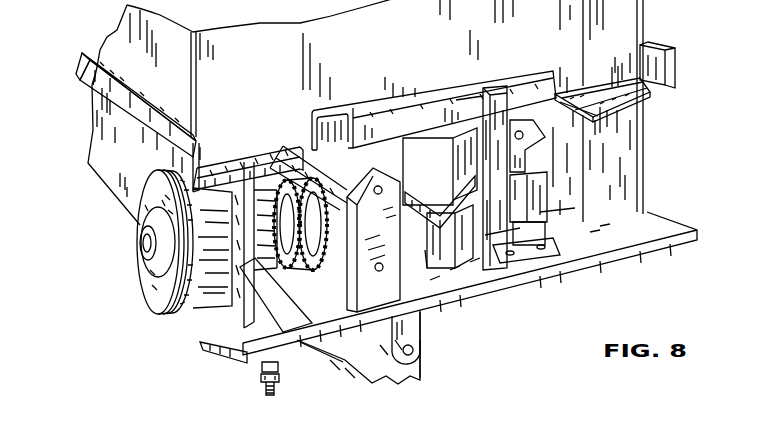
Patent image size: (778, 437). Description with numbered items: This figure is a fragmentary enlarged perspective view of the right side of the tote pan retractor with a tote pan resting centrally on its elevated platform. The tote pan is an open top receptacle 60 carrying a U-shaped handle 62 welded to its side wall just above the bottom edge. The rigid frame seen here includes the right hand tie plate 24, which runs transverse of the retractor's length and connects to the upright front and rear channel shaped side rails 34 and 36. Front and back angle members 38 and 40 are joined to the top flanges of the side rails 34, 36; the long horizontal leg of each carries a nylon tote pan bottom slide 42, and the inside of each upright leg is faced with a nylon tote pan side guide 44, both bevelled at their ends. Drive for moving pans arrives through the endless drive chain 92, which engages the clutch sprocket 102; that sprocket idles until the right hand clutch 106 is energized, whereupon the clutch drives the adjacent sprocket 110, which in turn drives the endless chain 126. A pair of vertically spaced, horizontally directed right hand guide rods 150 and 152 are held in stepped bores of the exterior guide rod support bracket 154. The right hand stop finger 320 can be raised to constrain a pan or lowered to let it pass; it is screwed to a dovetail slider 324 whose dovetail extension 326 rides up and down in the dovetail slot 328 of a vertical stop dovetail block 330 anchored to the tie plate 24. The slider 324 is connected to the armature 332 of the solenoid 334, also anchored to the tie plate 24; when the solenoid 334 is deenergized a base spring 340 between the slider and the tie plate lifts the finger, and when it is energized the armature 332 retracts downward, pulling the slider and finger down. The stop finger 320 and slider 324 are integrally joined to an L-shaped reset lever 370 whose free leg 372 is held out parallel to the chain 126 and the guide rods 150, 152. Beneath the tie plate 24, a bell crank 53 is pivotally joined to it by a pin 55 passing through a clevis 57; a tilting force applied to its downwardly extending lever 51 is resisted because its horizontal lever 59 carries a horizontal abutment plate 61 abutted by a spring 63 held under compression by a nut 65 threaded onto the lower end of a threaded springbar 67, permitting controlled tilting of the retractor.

The right hand tie plate 24 is at (682, 240).
The front channel shaped side rail 34 is at (137, 165).
The rear channel shaped side rail 36 is at (650, 176).
The front angle member 38 is at (97, 83).
The back angle member 40 is at (672, 96).
The tote pan bottom slide 42 is at (230, 163).
The tote pan side guide 44 is at (170, 108).
The downwardly extending lever 51 is at (417, 371).
The bell crank 53 is at (382, 363).
The pin 55 is at (418, 361).
The clevis 57 is at (422, 342).
The horizontal lever 59 is at (342, 360).
The open top receptacle 60 is at (423, 50).
The horizontal abutment plate 61 is at (240, 348).
The U-shaped handle 62 is at (416, 133).
The spring 63 is at (278, 374).
The nut 65 is at (266, 385).
The threaded springbar 67 is at (262, 369).
The drive chain 92 is at (310, 270).
The clutch sprocket 102 is at (262, 290).
The right hand clutch 106 is at (162, 292).
The sprocket 110 is at (280, 152).
The endless chain 126 is at (312, 249).
The right hand guide rod 150 is at (296, 142).
The right hand guide rod 152 is at (340, 236).
The exterior guide rod support bracket 154 is at (388, 298).
The right hand stop finger 320 is at (497, 112).
The dovetail slider 324 is at (505, 233).
The dovetail extension 326 is at (462, 125).
The dovetail slot 328 is at (468, 140).
The stop dovetail block 330 is at (447, 181).
The armature 332 is at (520, 158).
The solenoid 334 is at (555, 210).
The base spring 340 is at (498, 257).
The right hand L-shaped reset lever 370 is at (474, 250).
The free leg 372 is at (425, 255).